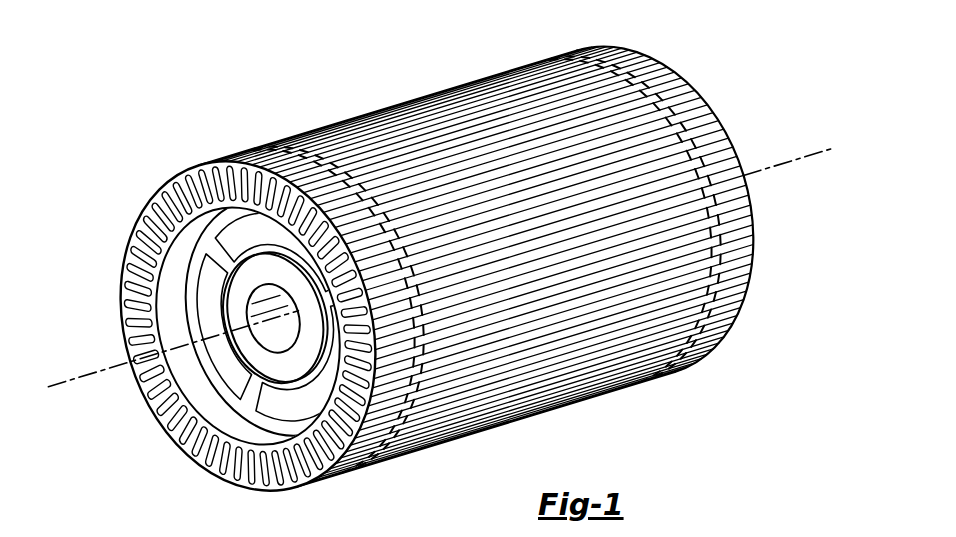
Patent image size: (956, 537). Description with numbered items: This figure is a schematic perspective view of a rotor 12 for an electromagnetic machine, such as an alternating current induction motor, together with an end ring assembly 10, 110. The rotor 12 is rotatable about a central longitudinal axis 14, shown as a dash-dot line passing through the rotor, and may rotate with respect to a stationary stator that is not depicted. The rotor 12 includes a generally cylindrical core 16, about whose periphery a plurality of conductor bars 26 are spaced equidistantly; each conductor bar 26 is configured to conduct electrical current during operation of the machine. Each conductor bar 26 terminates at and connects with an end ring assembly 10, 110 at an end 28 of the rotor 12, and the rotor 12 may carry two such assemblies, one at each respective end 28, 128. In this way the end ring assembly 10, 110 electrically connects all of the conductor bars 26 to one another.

The rotor 12 is at (384, 52).
The end ring assembly 10 is at (247, 304).
The end ring assembly 110 is at (187, 149).
The central longitudinal axis 14 is at (87, 392).
The generally cylindrical core 16 is at (483, 445).
The conductor bars 26 is at (698, 97).
The end 28 is at (381, 474).
The end 128 is at (684, 392).